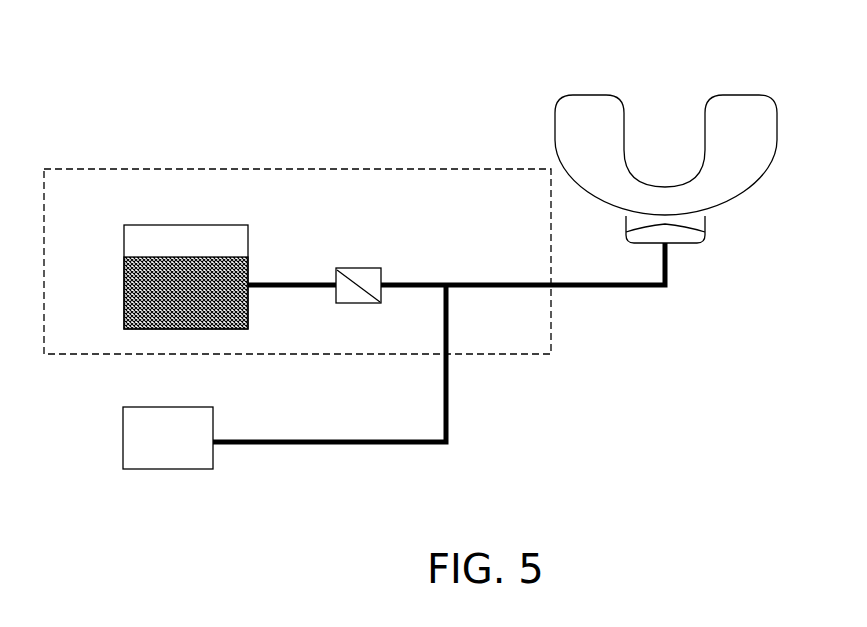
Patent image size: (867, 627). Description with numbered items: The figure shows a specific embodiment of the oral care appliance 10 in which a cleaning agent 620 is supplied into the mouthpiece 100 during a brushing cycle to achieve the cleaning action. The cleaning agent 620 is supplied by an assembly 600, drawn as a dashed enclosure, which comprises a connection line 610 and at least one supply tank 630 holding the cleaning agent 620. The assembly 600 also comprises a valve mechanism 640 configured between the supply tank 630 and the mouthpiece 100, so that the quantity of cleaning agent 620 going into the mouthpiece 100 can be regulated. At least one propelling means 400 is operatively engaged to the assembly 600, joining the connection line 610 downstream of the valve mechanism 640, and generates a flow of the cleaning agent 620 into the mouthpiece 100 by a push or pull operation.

The oral care appliance 10 is at (334, 73).
The mouthpiece 100 is at (568, 130).
The propelling means 400 is at (123, 435).
The assembly 600 is at (185, 167).
The connection line 610 is at (618, 290).
The cleaning agent 620 is at (127, 293).
The supply tank 630 is at (182, 224).
The valve mechanism 640 is at (362, 278).